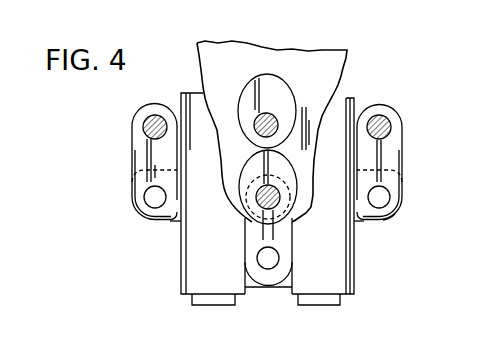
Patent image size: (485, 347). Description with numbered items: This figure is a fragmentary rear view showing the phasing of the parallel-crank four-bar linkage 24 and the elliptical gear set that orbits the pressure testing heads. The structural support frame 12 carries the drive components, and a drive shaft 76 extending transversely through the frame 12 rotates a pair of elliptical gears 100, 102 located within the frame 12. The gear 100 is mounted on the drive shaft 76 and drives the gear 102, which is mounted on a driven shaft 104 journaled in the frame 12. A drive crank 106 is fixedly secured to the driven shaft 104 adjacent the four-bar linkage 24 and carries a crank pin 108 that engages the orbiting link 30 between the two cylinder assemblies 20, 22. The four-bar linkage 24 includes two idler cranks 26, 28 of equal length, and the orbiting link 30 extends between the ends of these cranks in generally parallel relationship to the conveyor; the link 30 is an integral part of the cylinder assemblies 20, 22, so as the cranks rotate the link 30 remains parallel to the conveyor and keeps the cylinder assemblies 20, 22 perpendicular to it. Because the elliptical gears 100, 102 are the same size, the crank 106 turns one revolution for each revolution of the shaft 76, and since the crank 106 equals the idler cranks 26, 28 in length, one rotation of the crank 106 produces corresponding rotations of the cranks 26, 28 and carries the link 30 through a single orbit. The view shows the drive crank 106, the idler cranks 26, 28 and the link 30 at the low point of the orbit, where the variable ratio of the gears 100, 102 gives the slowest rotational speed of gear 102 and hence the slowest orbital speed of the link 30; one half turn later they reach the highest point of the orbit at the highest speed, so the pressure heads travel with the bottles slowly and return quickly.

The structural support frame 12 is at (342, 47).
The cylinder assembly 20 is at (190, 272).
The cylinder assembly 22 is at (330, 278).
The parallel-crank four-bar linkage 24 is at (232, 199).
The idler crank 26 is at (142, 157).
The idler crank 28 is at (400, 164).
The orbiting link 30 is at (403, 223).
The drive shaft 76 is at (256, 124).
The elliptical gear 100 is at (301, 104).
The elliptical gear 102 is at (243, 182).
The driven shaft 104 is at (280, 201).
The drive crank 106 is at (285, 234).
The crank pin 108 is at (259, 259).